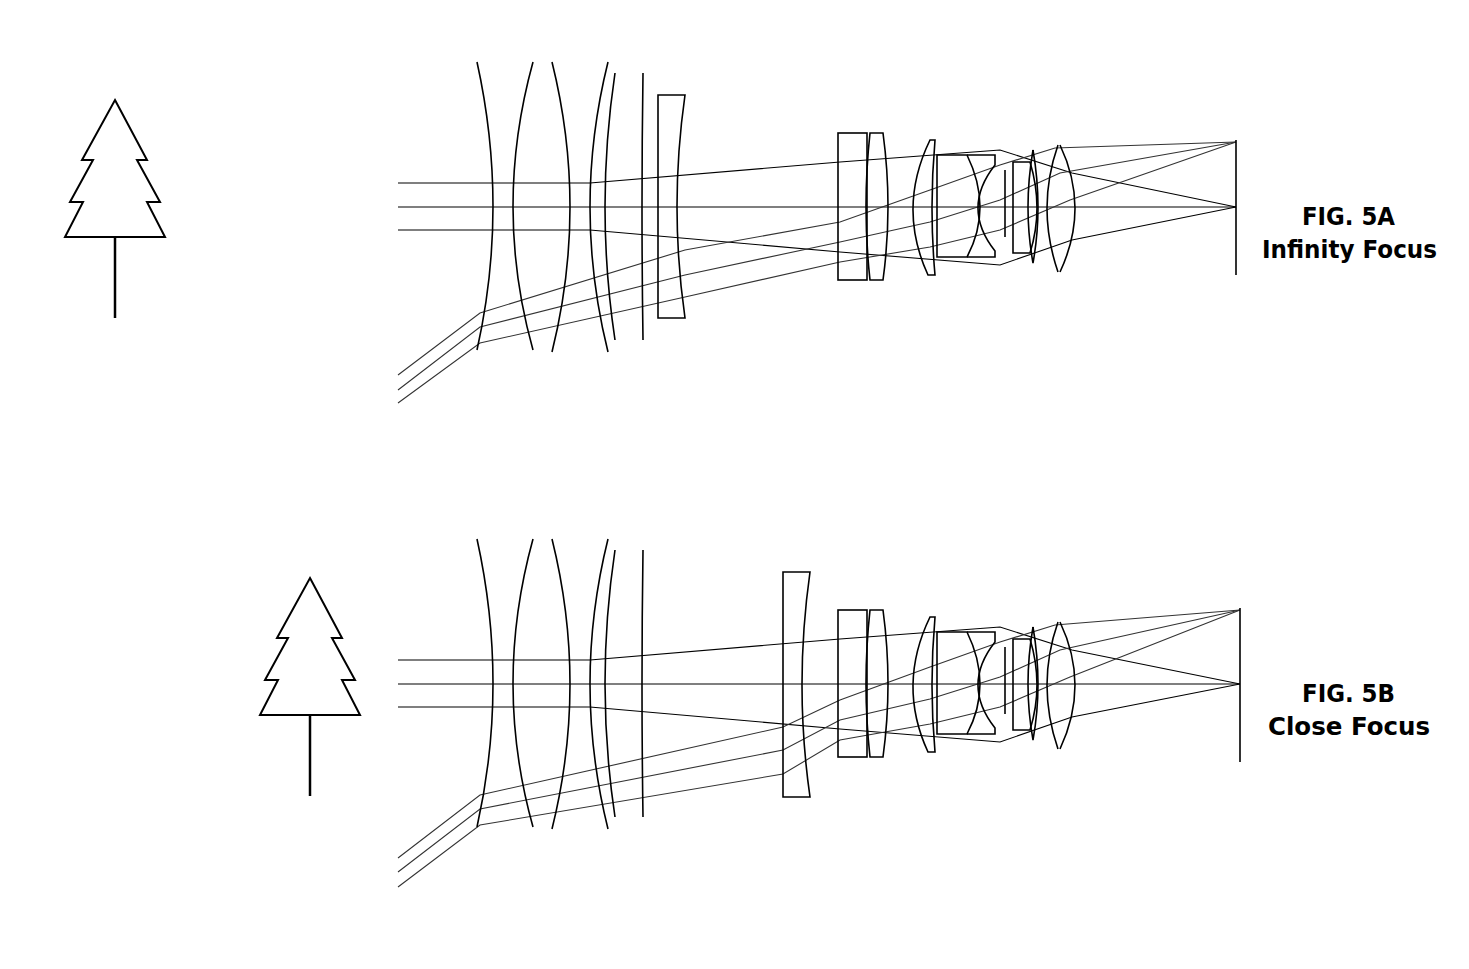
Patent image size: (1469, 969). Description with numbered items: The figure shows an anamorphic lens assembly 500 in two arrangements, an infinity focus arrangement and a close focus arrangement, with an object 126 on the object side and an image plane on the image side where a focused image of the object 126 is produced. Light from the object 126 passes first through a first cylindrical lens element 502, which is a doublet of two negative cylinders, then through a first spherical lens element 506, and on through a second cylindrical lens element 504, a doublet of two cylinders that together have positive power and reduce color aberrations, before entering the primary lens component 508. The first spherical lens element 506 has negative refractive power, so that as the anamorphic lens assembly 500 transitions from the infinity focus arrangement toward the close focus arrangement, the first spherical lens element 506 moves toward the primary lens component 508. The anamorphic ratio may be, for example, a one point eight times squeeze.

In FIG. 5A, the object 126 is at (115, 100).
In FIG. 5B, the object 126 is at (310, 578).
In FIG. 5A, the anamorphic lens assembly 500 is at (1080, 116).
In FIG. 5B, the anamorphic lens assembly 500 is at (1138, 582).
In FIG. 5A, the first cylindrical lens element 502 is at (643, 408).
In FIG. 5B, the first cylindrical lens element 502 is at (643, 533).
In FIG. 5A, the second cylindrical lens element 504 is at (837, 408).
In FIG. 5B, the second cylindrical lens element 504 is at (927, 480).
In FIG. 5A, the first spherical lens element 506 is at (685, 317).
In FIG. 5B, the first spherical lens element 506 is at (810, 790).
In FIG. 5A, the primary lens component 508 is at (917, 408).
In FIG. 5B, the primary lens component 508 is at (894, 533).